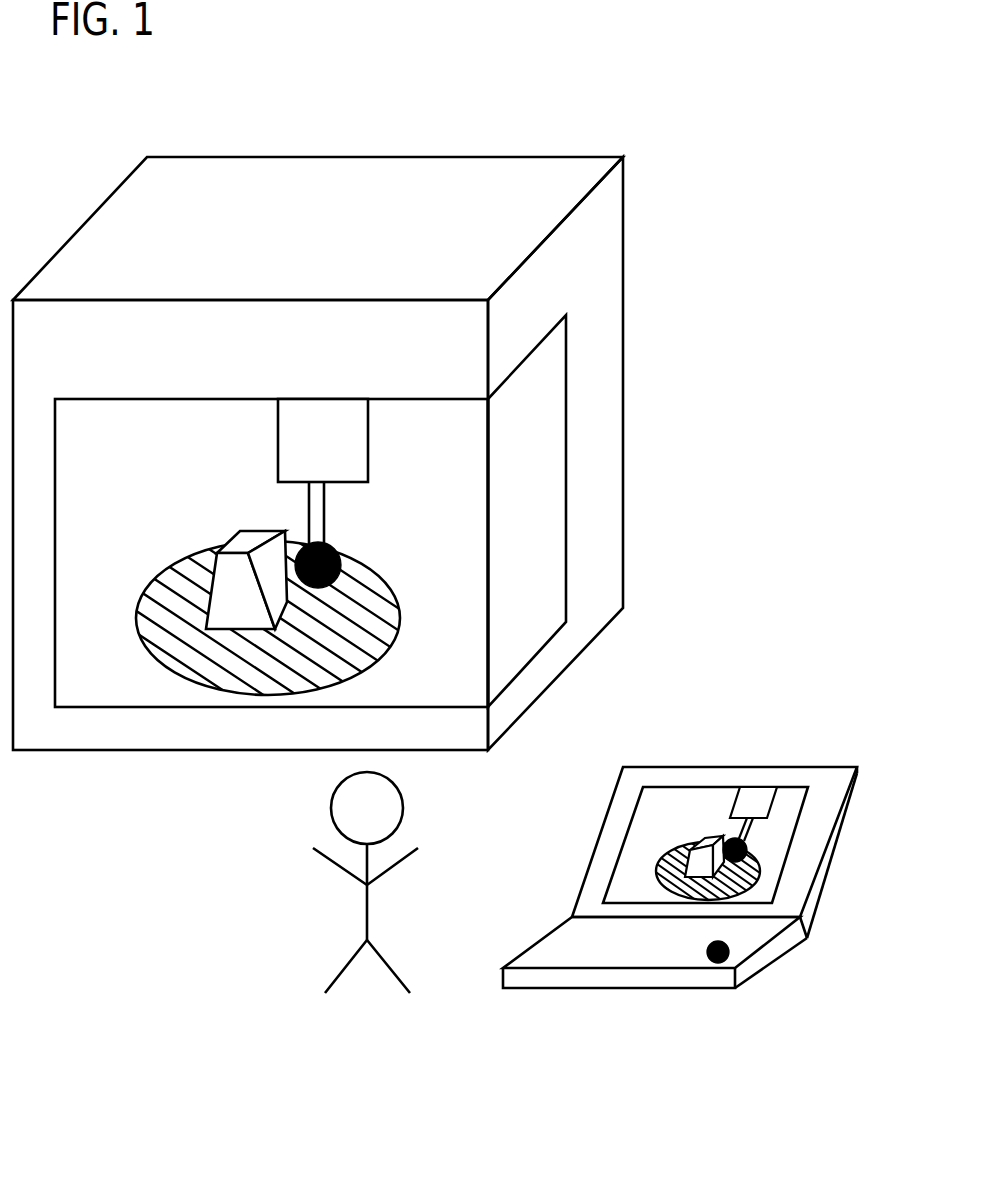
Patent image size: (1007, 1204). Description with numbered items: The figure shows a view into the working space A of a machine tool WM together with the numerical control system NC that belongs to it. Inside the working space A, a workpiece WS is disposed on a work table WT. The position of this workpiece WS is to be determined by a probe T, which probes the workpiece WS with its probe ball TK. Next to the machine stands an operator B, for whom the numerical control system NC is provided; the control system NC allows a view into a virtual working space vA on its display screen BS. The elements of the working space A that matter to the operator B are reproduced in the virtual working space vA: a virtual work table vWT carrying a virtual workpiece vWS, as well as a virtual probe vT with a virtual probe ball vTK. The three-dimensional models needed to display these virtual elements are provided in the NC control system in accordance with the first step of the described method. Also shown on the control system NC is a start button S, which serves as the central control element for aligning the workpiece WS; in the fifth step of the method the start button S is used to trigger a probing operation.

The machine tool WM is at (327, 152).
The working space A is at (98, 455).
The workpiece WS is at (248, 545).
The probe T is at (327, 492).
The probe ball TK is at (332, 549).
The work table WT is at (375, 652).
The operator B is at (365, 913).
The numerical control system NC is at (752, 713).
The display screen BS is at (632, 822).
The virtual working space vA is at (785, 803).
The virtual workpiece vWS is at (712, 838).
The virtual probe vT is at (748, 829).
The virtual probe ball vTK is at (756, 855).
The virtual work table vWT is at (680, 884).
The start button S is at (719, 962).